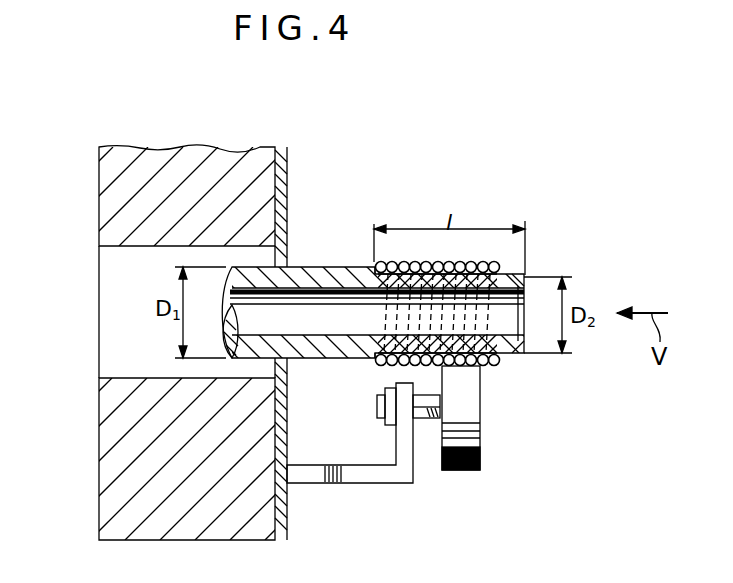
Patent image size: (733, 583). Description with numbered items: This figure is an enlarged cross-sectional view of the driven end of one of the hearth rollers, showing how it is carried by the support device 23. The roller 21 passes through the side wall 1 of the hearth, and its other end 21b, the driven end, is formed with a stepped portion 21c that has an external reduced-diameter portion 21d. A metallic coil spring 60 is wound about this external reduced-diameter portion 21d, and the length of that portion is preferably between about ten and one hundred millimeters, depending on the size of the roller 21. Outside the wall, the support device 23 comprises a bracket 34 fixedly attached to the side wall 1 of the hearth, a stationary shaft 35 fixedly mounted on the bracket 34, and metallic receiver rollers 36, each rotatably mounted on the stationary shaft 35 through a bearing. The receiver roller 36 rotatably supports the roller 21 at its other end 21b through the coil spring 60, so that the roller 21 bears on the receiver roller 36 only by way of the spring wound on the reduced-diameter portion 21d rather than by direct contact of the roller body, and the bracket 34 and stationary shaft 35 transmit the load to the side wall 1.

The side wall 1 is at (233, 188).
The roller 21 is at (302, 266).
The other end 21b is at (513, 273).
The stepped portion 21c is at (378, 263).
The external reduced-diameter portion 21d is at (452, 266).
The support device 23 is at (476, 198).
The bracket 34 is at (363, 476).
The stationary shaft 35 is at (425, 418).
The receiver roller 36 is at (480, 423).
The coil spring 60 is at (438, 261).